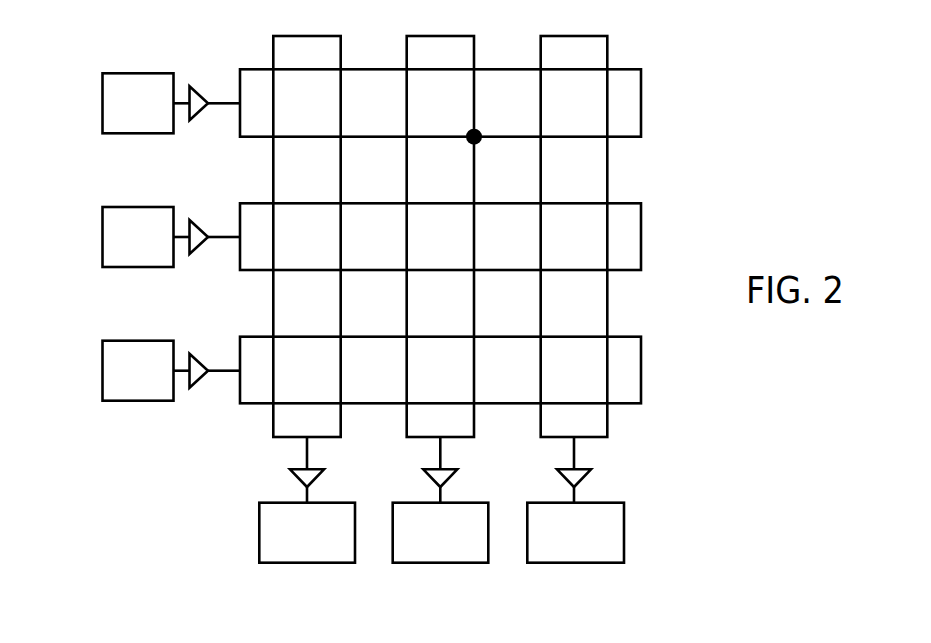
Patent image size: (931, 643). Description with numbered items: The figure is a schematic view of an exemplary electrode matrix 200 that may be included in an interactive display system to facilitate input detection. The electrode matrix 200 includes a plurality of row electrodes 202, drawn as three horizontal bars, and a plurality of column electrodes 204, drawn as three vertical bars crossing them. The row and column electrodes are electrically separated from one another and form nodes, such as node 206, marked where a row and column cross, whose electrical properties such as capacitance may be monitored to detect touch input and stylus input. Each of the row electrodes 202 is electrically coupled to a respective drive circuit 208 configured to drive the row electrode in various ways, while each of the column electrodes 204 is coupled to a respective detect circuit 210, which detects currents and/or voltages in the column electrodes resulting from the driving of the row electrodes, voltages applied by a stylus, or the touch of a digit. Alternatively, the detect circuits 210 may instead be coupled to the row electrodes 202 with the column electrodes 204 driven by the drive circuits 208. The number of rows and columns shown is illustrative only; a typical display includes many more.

The electrode matrix 200 is at (480, 236).
The row electrodes 202 is at (130, 236).
The column electrodes 204 is at (441, 525).
The node 206 is at (480, 143).
The drive circuit 208 is at (122, 125).
The detect circuit 210 is at (292, 556).